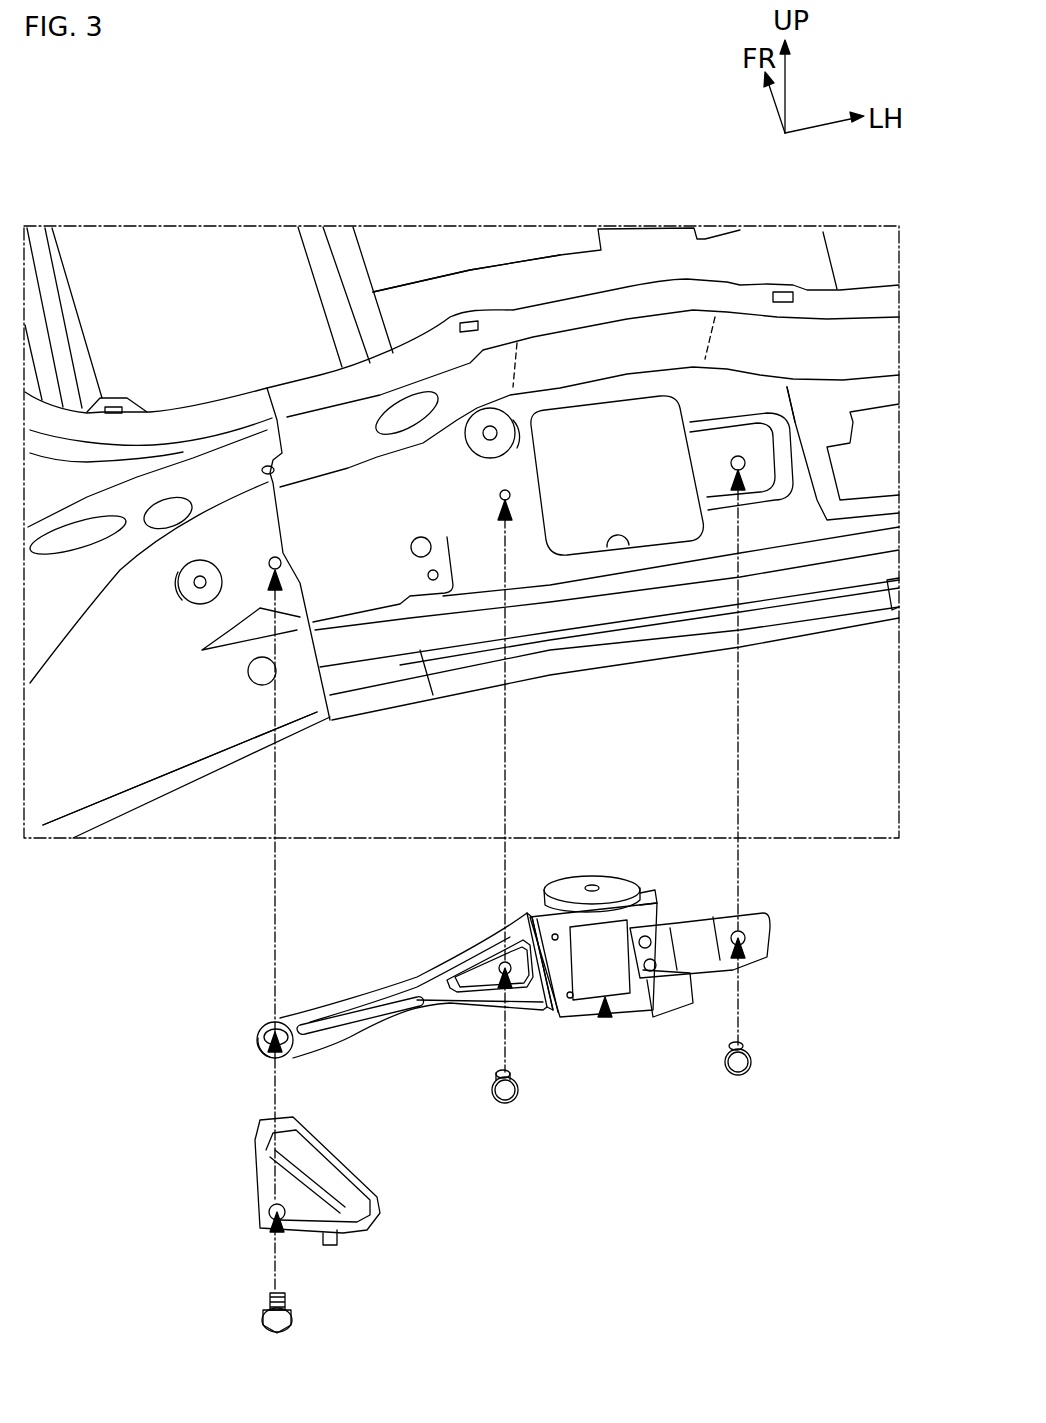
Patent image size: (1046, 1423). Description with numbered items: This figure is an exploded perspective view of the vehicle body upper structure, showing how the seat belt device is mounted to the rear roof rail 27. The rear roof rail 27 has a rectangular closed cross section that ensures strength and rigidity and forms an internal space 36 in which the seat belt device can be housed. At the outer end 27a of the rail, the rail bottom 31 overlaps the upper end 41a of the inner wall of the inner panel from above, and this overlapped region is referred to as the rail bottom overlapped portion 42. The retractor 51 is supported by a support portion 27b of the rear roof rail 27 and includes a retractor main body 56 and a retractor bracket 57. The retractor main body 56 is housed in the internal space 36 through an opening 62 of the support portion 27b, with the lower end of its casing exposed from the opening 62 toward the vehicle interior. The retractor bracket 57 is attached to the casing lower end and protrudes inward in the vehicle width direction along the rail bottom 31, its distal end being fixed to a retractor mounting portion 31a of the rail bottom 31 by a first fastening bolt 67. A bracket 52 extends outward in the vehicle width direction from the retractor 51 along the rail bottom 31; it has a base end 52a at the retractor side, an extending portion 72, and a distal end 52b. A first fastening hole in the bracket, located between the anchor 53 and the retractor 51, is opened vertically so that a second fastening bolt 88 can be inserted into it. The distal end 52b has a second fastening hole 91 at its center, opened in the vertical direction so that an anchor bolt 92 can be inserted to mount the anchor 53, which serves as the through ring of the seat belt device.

The rear roof rail 27 is at (586, 340).
The outer end 27a is at (297, 447).
The support portion 27b is at (707, 402).
The internal space 36 is at (630, 494).
The opening 62 is at (605, 552).
The rail bottom 31 is at (770, 522).
The retractor mounting portion 31a is at (767, 462).
The upper end 41a is at (253, 557).
The rail bottom overlapped portion 42 is at (180, 693).
The bracket 52 is at (377, 1002).
The extending portion 72 is at (402, 975).
The distal end 52b is at (267, 1023).
The second fastening hole 91 is at (253, 1046).
The base end 52a is at (552, 1020).
The retractor main body 56 is at (608, 1015).
The retractor bracket 57 is at (702, 950).
The retractor 51 is at (648, 1018).
The second fastening bolt 88 is at (507, 1103).
The first fastening bolt 67 is at (742, 1036).
The anchor 53 is at (387, 1198).
The anchor bolt 92 is at (260, 1307).